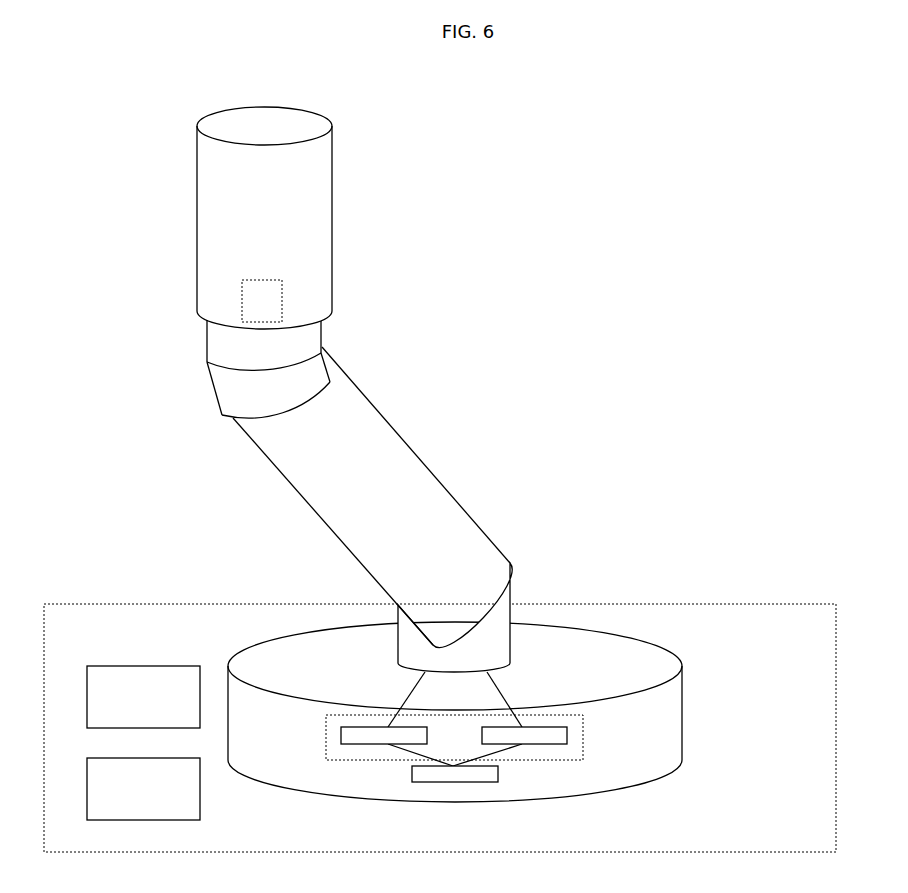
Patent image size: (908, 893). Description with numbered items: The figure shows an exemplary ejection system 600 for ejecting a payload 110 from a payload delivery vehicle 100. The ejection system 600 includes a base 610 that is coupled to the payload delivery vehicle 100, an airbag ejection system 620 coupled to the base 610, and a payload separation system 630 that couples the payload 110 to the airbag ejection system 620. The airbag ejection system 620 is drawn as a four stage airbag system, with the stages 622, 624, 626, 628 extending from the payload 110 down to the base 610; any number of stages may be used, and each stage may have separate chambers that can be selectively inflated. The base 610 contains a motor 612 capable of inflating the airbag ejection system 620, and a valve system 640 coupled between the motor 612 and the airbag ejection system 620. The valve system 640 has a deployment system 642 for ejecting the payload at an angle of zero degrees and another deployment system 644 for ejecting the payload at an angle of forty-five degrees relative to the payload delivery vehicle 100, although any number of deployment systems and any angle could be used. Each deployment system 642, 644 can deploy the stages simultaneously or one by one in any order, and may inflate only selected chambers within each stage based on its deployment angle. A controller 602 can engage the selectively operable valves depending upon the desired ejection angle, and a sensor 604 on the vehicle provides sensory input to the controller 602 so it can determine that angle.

The payload delivery vehicle 100 is at (836, 665).
The payload 110 is at (332, 200).
The ejection system 600 is at (721, 195).
The controller 602 is at (143, 666).
The sensor 604 is at (200, 780).
The base 610 is at (682, 712).
The motor 612 is at (468, 782).
The airbag ejection system 620 is at (371, 496).
The first airbag stage 622 is at (207, 340).
The second airbag stage 624 is at (222, 400).
The third airbag stage 626 is at (282, 478).
The fourth airbag stage 628 is at (510, 612).
The payload separation system 630 is at (261, 280).
The valve system 640 is at (545, 760).
The deployment system 642 is at (379, 744).
The deployment system 644 is at (567, 743).